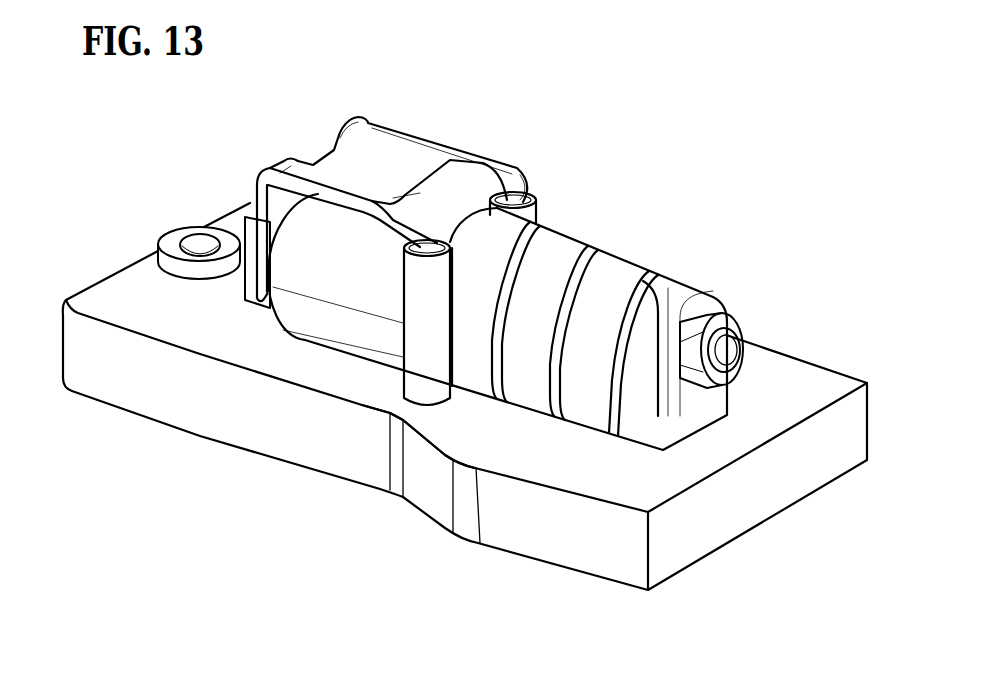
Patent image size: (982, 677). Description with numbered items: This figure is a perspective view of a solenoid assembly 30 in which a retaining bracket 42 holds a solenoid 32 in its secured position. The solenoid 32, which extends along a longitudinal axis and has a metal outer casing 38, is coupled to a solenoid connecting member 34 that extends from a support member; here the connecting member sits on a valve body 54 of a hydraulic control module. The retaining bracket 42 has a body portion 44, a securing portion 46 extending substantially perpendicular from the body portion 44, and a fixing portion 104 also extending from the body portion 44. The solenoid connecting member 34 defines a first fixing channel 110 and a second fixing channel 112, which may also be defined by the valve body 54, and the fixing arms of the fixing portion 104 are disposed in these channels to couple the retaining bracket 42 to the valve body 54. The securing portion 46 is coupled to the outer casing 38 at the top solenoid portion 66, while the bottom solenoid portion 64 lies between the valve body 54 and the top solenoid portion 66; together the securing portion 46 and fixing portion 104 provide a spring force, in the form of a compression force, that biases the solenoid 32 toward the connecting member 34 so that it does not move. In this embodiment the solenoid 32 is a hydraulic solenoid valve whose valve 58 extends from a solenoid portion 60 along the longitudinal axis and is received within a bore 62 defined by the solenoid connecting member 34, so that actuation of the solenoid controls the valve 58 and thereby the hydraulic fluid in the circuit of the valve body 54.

The solenoid assembly 30 is at (151, 152).
The solenoid 32 is at (357, 333).
The solenoid connecting member 34 is at (464, 242).
The outer casing 38 is at (323, 323).
The retaining bracket 42 is at (380, 119).
The body portion 44 is at (418, 123).
The securing portion 46 is at (283, 144).
The valve body 54 is at (655, 486).
The valve 58 is at (737, 334).
The solenoid portion 60 is at (371, 375).
The bore 62 is at (708, 317).
The bottom solenoid portion 64 is at (283, 335).
The top solenoid portion 66 is at (358, 243).
The fixing portion 104 is at (547, 216).
The first fixing channel 110 is at (524, 198).
The second fixing channel 112 is at (443, 242).